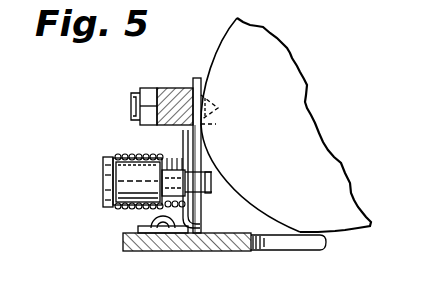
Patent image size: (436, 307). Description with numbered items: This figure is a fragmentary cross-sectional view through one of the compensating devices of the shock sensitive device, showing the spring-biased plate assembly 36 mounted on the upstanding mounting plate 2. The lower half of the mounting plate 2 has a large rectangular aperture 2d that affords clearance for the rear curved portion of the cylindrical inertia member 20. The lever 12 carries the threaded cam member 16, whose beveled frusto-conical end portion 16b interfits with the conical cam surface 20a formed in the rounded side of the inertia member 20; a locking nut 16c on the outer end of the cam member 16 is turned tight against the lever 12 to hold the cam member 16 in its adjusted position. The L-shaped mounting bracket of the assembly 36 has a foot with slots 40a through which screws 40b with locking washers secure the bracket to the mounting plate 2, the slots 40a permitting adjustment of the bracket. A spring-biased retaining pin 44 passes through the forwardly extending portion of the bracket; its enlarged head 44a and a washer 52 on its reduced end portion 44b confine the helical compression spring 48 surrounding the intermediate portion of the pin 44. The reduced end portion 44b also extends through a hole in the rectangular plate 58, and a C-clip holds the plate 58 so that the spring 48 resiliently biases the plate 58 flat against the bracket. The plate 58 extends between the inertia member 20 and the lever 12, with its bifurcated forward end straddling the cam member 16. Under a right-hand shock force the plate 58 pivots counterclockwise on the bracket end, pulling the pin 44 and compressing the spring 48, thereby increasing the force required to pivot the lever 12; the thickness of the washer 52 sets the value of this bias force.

The mounting plate 2 is at (196, 251).
The rectangular aperture 2d is at (296, 251).
The lever 12 is at (172, 88).
The cam member 16 is at (131, 108).
The frusto-conical end portion 16b is at (220, 98).
The locking nut 16c is at (150, 88).
The inertia member 20 is at (287, 63).
The cam surface 20a is at (216, 124).
The spring-biased plate assembly 36 is at (72, 167).
The slots 40a is at (138, 229).
The screws 40b is at (152, 213).
The spring-biased retaining pin 44 is at (100, 183).
The enlarged head 44a is at (108, 162).
The reduced end portion 44b is at (214, 194).
The helical compression spring 48 is at (128, 153).
The washer 52 is at (185, 152).
The plate 58 is at (197, 78).